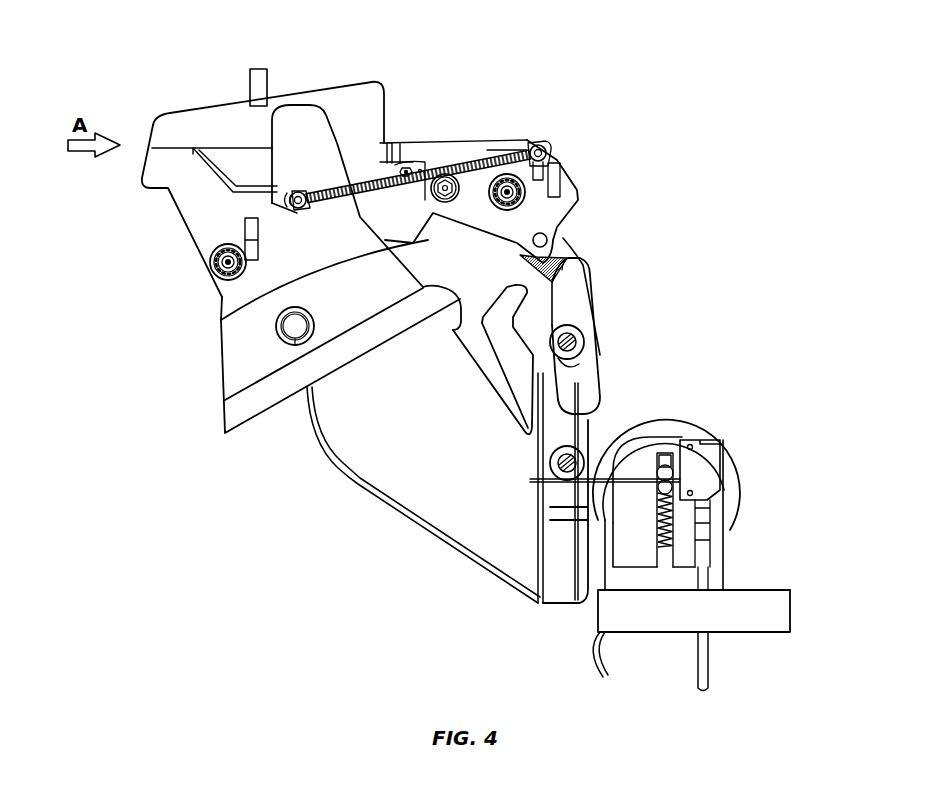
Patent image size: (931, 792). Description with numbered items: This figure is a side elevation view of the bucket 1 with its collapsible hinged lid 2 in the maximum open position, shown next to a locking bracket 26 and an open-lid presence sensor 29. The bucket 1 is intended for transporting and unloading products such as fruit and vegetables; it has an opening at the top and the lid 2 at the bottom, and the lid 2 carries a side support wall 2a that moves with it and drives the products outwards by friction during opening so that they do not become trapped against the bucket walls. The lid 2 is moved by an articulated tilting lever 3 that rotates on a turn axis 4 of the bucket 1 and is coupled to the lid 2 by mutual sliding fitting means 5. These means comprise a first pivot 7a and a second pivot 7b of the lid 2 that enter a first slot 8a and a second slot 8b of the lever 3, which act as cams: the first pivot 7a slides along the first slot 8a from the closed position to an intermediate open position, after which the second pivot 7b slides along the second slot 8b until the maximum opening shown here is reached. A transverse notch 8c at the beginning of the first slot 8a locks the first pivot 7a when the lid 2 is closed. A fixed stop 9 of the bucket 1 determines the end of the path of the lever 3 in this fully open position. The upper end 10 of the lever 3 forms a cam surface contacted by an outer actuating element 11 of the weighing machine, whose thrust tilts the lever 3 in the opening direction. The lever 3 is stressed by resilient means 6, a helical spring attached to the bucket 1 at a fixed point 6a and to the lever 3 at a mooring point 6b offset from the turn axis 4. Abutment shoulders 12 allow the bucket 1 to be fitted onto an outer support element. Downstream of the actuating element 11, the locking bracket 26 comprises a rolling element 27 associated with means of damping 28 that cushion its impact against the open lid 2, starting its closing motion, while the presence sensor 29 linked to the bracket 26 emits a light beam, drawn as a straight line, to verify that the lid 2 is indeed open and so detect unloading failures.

The bucket 1 is at (575, 60).
The collapsible hinged lid 2 is at (573, 593).
The side support wall 2a is at (408, 480).
The articulated tilting lever 3 is at (238, 305).
The turn axis 4 is at (407, 165).
The mutual sliding fitting means 5 is at (670, 264).
The resilient means 6 is at (478, 148).
The fixed point 6a is at (541, 151).
The mooring point 6b is at (296, 197).
The first pivot 7a is at (570, 462).
The second pivot 7b is at (580, 335).
The first slot 8a is at (522, 368).
The second slot 8b is at (572, 300).
The transverse notch 8c is at (525, 283).
The fixed stop 9 is at (445, 175).
The upper end 10 is at (298, 118).
The actuating element 11 is at (262, 67).
The abutment shoulders 12 is at (512, 192).
The locking bracket 26 is at (760, 417).
The rolling element 27 is at (690, 423).
The means of damping 28 is at (668, 535).
The presence sensor 29 is at (705, 480).